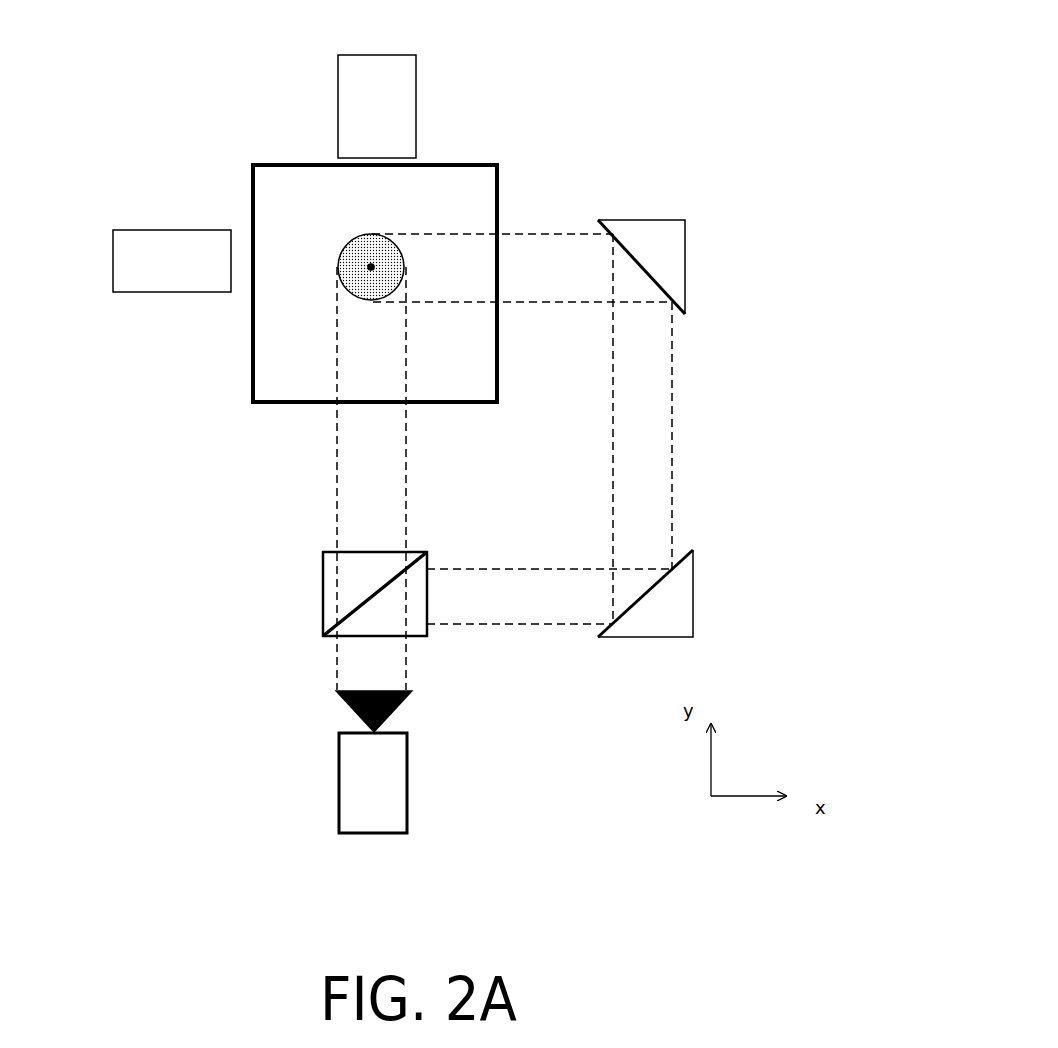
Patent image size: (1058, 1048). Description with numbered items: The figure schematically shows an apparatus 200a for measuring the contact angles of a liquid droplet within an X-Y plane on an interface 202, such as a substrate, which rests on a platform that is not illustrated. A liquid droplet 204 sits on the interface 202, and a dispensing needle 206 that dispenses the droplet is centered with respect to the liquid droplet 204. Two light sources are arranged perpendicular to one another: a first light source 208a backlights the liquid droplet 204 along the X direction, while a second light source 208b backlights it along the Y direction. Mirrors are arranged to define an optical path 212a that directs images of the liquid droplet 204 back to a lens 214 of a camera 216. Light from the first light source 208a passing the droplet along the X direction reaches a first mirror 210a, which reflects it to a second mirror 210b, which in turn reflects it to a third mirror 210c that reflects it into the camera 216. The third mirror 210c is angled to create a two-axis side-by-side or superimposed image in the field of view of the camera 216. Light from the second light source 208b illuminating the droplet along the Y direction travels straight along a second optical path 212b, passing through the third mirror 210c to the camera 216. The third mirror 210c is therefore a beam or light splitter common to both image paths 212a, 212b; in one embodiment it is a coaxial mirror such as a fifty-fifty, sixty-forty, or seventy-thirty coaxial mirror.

The apparatus 200a is at (773, 68).
The interface 202 is at (450, 163).
The liquid droplet 204 is at (339, 265).
The dispensing needle 206 is at (375, 266).
The first light source 208a is at (172, 261).
The second light source 208b is at (377, 106).
The first mirror 210a is at (640, 220).
The second mirror 210b is at (693, 585).
The third mirror 210c is at (394, 638).
The optical path 212a is at (525, 302).
The second optical path 212b is at (337, 473).
The lens 214 is at (402, 707).
The camera 216 is at (373, 783).